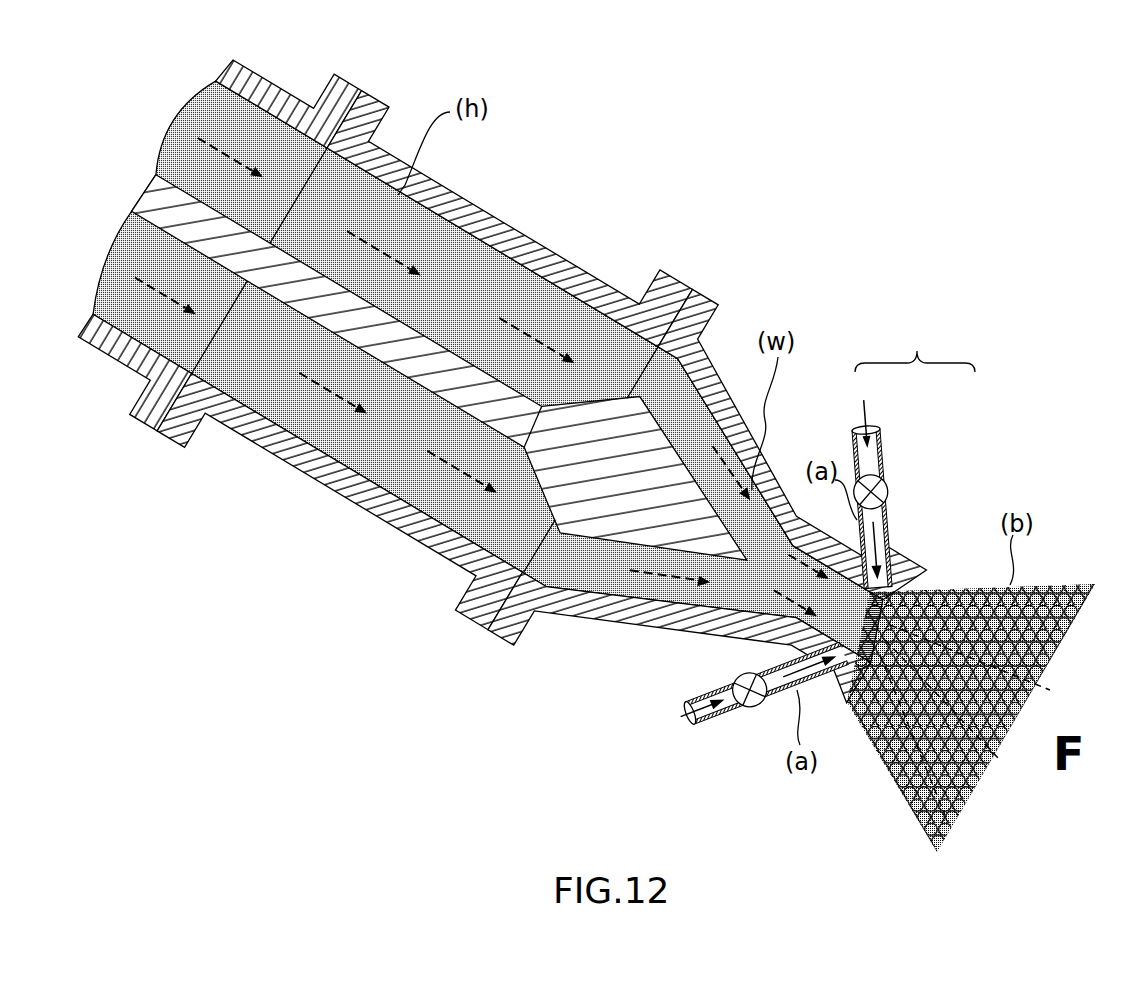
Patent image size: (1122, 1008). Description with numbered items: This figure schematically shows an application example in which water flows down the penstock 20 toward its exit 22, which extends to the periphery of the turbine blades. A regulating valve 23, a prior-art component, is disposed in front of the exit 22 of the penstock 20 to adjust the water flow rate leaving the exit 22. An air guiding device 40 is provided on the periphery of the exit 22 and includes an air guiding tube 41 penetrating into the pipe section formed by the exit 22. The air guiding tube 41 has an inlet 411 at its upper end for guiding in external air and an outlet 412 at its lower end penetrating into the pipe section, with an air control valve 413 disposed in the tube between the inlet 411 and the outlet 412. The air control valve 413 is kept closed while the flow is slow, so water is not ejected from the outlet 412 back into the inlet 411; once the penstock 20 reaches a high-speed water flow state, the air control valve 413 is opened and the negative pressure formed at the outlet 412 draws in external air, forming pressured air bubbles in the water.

The penstock 20 is at (370, 327).
The exit 22 is at (738, 548).
The regulating valve 23 is at (446, 373).
The air guiding device 40 is at (887, 453).
The air guiding tube 41 is at (883, 477).
The inlet 411 is at (870, 428).
The outlet 412 is at (896, 567).
The air control valve 413 is at (884, 480).